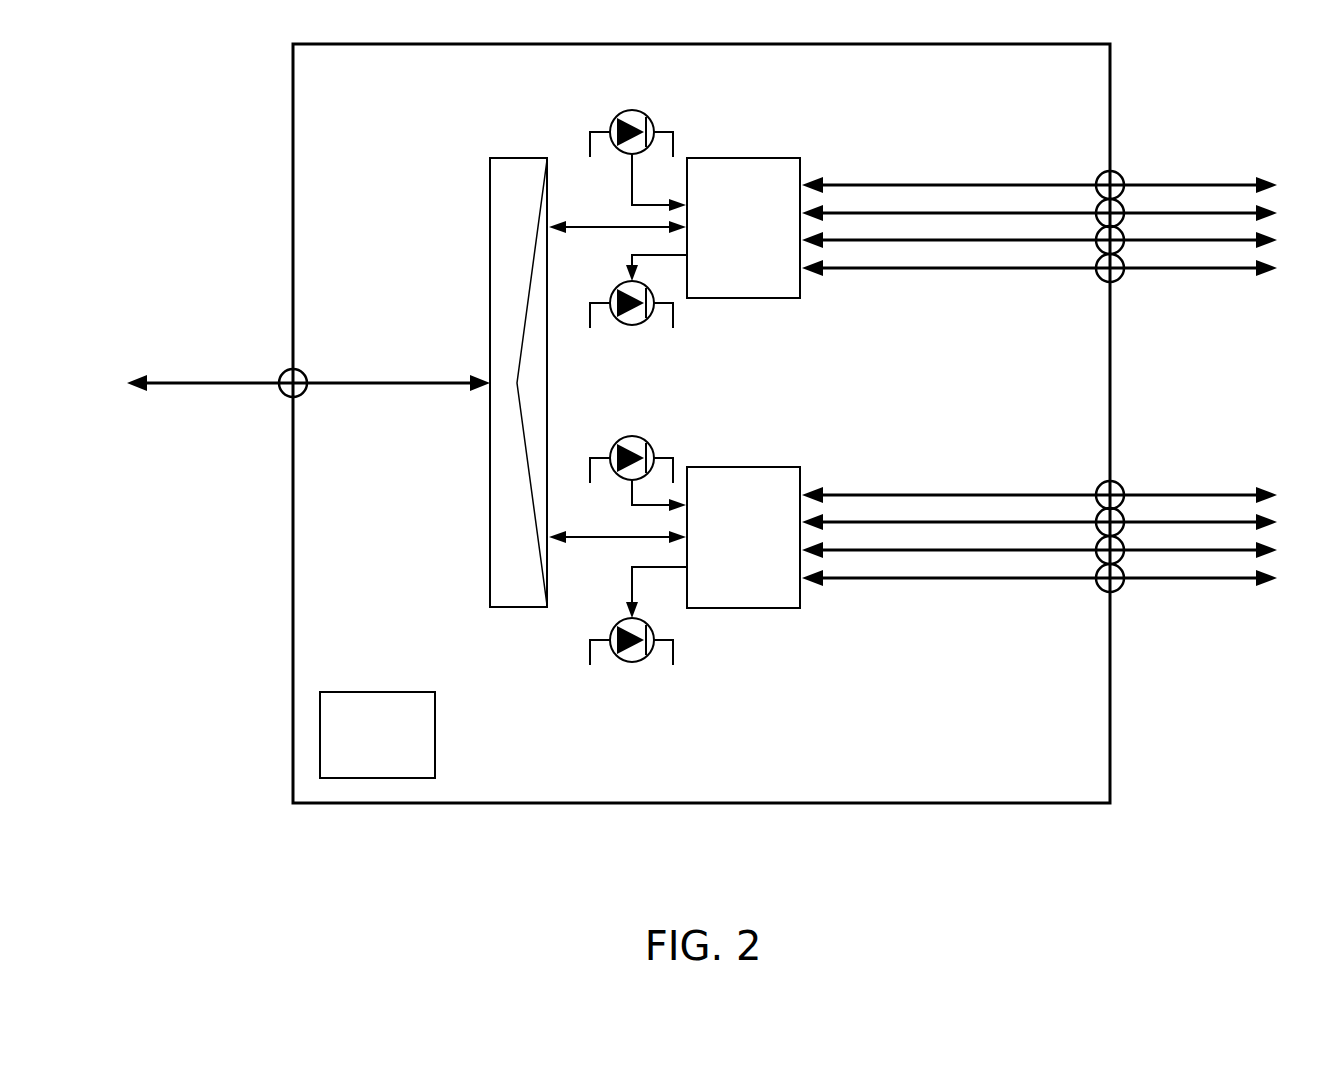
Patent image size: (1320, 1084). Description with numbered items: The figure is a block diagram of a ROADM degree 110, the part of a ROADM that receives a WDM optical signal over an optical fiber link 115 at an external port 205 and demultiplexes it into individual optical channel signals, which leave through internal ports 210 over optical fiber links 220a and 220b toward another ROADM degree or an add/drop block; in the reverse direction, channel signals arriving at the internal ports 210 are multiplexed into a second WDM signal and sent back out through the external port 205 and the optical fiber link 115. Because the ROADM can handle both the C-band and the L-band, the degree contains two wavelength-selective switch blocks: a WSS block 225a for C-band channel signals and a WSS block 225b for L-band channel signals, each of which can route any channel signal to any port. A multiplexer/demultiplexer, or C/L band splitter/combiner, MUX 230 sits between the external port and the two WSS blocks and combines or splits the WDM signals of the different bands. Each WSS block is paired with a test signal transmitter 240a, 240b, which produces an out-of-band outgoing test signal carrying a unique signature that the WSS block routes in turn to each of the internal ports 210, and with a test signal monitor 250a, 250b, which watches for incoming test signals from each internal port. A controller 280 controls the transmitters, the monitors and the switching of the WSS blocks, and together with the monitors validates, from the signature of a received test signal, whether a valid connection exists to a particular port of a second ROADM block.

The ROADM degree 110 is at (682, 798).
The optical fiber link 115 is at (237, 380).
The external port 205 is at (282, 397).
The internal ports 210 is at (1140, 832).
The optical fiber link 220a is at (1167, 272).
The optical fiber link 220b is at (1167, 582).
The WSS block 225a is at (718, 252).
The WSS block 225b is at (718, 564).
The multiplexer/demultiplexer (MUX) 230 is at (498, 661).
The test signal transmitter 240a is at (606, 102).
The test signal transmitter 240b is at (606, 431).
The test signal monitor 250a is at (606, 357).
The test signal monitor 250b is at (606, 699).
The controller 280 is at (358, 761).